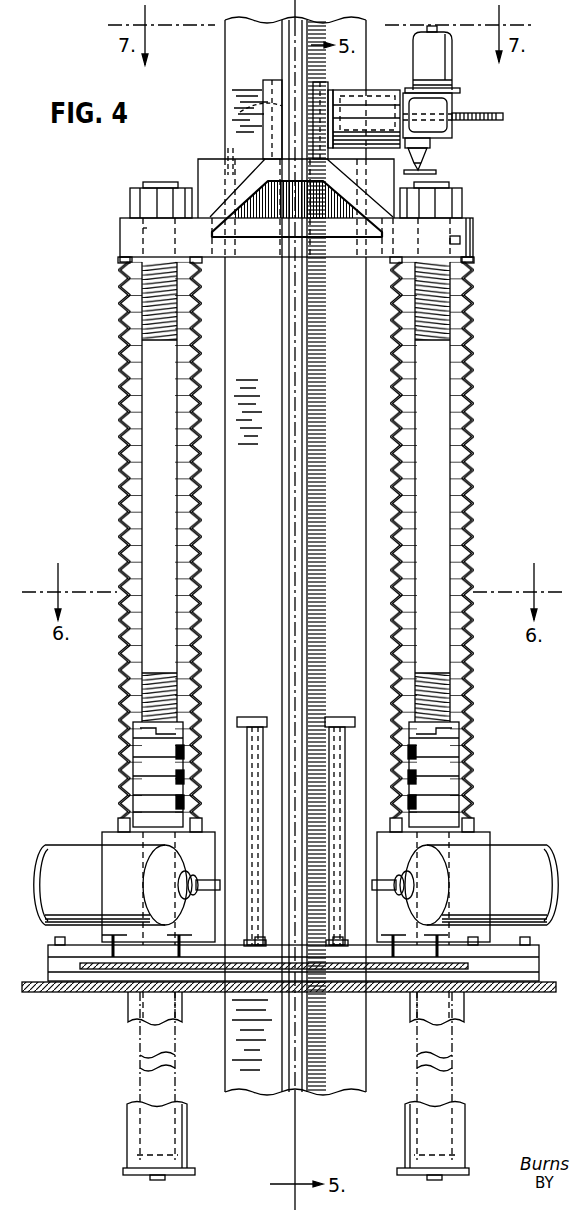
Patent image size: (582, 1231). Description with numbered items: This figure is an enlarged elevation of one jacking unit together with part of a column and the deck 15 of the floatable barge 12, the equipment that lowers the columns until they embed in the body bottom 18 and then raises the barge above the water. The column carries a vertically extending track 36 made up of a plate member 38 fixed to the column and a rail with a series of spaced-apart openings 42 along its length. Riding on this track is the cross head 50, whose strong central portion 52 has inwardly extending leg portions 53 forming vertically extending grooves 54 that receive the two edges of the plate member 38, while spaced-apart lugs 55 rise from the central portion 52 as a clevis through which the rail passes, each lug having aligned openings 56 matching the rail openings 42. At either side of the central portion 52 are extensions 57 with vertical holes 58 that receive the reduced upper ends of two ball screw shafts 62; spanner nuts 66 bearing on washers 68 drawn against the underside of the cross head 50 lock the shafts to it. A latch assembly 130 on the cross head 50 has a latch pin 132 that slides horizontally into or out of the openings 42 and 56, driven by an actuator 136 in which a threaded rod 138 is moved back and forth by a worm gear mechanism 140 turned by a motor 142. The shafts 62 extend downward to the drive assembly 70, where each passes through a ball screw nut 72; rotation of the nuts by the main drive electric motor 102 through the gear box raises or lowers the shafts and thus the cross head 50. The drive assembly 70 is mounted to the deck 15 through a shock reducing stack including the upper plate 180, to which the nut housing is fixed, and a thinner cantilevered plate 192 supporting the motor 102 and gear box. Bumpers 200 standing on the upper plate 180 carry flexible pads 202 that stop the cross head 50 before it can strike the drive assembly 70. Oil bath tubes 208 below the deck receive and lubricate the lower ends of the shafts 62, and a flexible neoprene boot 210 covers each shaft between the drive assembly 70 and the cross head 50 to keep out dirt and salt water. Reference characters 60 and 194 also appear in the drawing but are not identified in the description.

The floatable barge 12 is at (98, 994).
The deck 15 is at (54, 996).
The body bottom 18 is at (530, 950).
The track 36 is at (285, 518).
The plate member 38 is at (355, 398).
The openings 42 is at (288, 571).
The cross head 50 is at (462, 240).
The central portion 52 is at (333, 245).
The leg portions 53 is at (198, 170).
The grooves 54 is at (228, 158).
The lugs 55 is at (272, 82).
The aligned openings 56 is at (244, 108).
The extensions 57 is at (130, 245).
The holes 58 is at (452, 242).
The bolt 60 is at (145, 231).
The ball screw shaft 62 is at (150, 375).
The spanner nuts 66 is at (150, 202).
The washer 68 is at (130, 265).
The drive assembly 70 is at (100, 840).
The ball screw nut 72 is at (148, 740).
The main drive electric motor 102 is at (50, 870).
The latch assembly 130 is at (438, 100).
The latch pin 132 is at (358, 118).
The actuator 136 is at (455, 103).
The threaded rod 138 is at (497, 112).
The worm gear mechanism 140 is at (447, 72).
The motor 142 is at (455, 133).
The upper plate 180 is at (78, 945).
The plate 192 is at (470, 969).
The base plate 194 is at (110, 950).
The bumpers 200 is at (248, 765).
The flexible pads 202 is at (255, 717).
The oil bath tubes 208 is at (150, 1128).
The flexible neoprene boot 210 is at (120, 490).